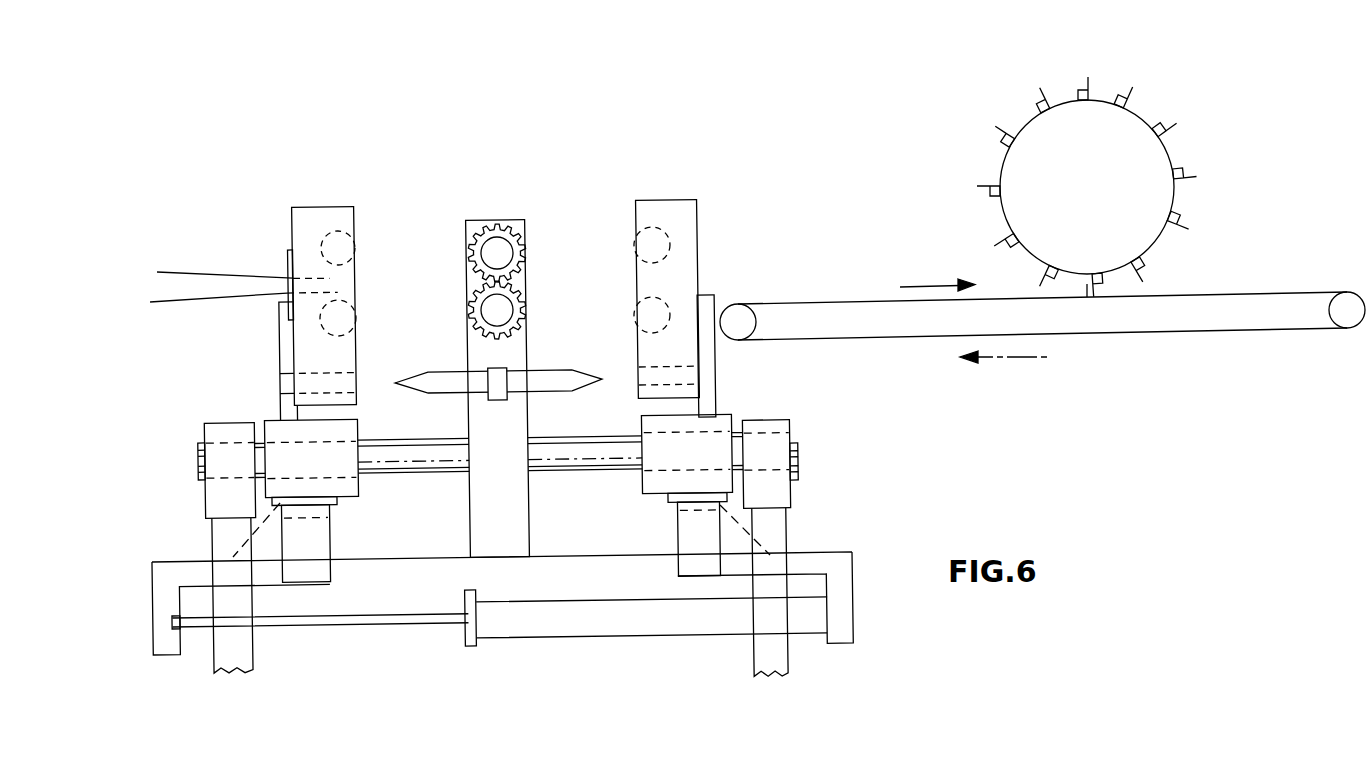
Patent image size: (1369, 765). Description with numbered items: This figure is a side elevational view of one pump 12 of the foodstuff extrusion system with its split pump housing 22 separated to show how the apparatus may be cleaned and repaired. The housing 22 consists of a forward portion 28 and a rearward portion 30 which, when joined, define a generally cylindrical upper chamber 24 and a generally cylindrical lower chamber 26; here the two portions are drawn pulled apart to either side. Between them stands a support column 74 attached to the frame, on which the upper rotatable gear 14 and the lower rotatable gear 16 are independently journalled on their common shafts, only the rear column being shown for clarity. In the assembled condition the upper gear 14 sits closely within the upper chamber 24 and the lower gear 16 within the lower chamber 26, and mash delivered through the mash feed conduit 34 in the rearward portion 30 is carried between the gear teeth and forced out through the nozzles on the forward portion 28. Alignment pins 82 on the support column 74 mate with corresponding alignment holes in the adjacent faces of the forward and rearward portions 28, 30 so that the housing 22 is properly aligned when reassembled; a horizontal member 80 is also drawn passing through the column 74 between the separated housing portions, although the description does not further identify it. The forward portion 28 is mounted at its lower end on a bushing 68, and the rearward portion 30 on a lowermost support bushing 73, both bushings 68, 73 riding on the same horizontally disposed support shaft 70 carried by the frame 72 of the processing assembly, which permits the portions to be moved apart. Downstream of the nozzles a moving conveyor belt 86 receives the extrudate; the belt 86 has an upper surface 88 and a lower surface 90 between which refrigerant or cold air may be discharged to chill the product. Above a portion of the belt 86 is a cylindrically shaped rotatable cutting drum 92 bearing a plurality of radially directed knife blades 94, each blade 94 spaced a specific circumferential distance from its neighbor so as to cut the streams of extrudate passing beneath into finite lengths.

The pump 12 is at (336, 204).
The upper rotatable gear 14 is at (521, 250).
The lower rotatable gear 16 is at (522, 314).
The split pump housing 22 is at (706, 207).
The upper chamber 24 is at (361, 244).
The lower chamber 26 is at (357, 326).
The forward portion 28 is at (690, 243).
The rearward portion 30 is at (295, 229).
The mash feed conduit 34 is at (239, 302).
The bushing 68 is at (642, 428).
The support shaft 70 is at (605, 476).
The frame 72 is at (615, 555).
The support bushing 73 is at (362, 488).
The support column 74 is at (472, 220).
The cross shaft 80 is at (452, 393).
The alignment pin 82 is at (362, 378).
The conveyor belt 86 is at (1042, 322).
The upper surface of the belt 88 is at (848, 302).
The lower surface of the belt 90 is at (852, 340).
The rotatable cutting drum 92 is at (1090, 170).
The knife blade 94 is at (1082, 80).